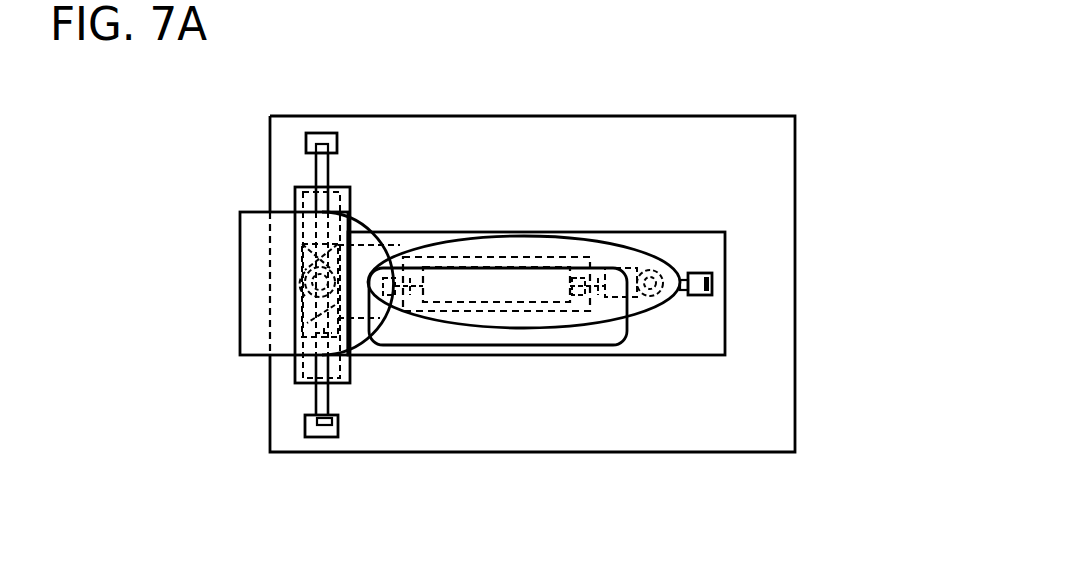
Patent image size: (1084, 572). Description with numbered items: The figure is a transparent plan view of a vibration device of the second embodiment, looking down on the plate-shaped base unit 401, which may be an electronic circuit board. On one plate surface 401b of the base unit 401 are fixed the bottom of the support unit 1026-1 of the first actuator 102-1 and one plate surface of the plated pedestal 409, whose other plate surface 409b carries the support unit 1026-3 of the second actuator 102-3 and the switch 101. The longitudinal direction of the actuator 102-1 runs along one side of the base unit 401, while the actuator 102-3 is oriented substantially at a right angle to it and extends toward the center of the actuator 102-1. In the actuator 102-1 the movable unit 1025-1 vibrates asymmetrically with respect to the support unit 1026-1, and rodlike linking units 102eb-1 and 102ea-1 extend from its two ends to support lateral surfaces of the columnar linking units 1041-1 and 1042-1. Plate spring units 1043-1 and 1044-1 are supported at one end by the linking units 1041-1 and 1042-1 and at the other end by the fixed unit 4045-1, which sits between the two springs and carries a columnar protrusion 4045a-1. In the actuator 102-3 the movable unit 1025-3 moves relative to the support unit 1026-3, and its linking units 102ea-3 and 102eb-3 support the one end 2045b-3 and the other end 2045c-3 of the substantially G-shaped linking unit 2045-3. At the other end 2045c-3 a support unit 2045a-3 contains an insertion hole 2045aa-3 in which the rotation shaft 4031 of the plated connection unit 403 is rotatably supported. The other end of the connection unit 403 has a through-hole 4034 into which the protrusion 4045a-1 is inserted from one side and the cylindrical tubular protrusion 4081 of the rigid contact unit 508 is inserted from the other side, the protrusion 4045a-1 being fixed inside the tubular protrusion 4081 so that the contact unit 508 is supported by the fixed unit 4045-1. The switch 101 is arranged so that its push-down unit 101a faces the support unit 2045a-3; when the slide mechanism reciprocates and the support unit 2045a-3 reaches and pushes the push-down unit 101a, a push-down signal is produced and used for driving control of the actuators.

The base unit 401 is at (737, 452).
The plate surface of base unit 401b is at (742, 198).
The connection unit 403 is at (553, 318).
The rotation shaft 4031 is at (672, 262).
The pedestal 409 is at (414, 328).
The plate surface of pedestal 409b is at (667, 247).
The one end of linking unit 2045b-3 is at (363, 293).
The linking unit 2045-3 is at (472, 345).
The support unit 2045a-3 is at (677, 307).
The other end of linking unit 2045c-3 is at (632, 300).
The insertion hole 2045aa-3 is at (654, 265).
The movable unit 1025-3 is at (517, 285).
The support unit 1026-3 is at (540, 257).
The actuator 102-3 is at (527, 305).
The linking unit 102ea-3 is at (413, 280).
The linking unit 102eb-3 is at (602, 280).
The switch 101 is at (708, 273).
The push-down unit 101a is at (684, 298).
The contact unit 508 is at (263, 213).
The actuator 102-1 is at (295, 371).
The movable unit 1025-1 is at (300, 338).
The support unit 1026-1 is at (295, 378).
The fixed unit 4045-1 is at (310, 313).
The protrusion 4045a-1 is at (285, 266).
The cylindrical tubular protrusion 4081 is at (302, 233).
The through-hole 4034 is at (298, 243).
The linking unit 1041-1 is at (318, 132).
The linking unit 1042-1 is at (318, 437).
The plate spring unit 1043-1 is at (318, 170).
The plate spring unit 1044-1 is at (307, 393).
The linking unit 102ea-1 is at (322, 392).
The linking unit 102eb-1 is at (330, 167).